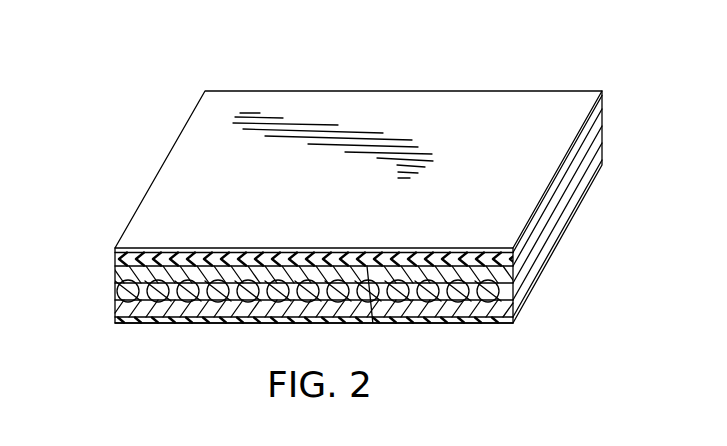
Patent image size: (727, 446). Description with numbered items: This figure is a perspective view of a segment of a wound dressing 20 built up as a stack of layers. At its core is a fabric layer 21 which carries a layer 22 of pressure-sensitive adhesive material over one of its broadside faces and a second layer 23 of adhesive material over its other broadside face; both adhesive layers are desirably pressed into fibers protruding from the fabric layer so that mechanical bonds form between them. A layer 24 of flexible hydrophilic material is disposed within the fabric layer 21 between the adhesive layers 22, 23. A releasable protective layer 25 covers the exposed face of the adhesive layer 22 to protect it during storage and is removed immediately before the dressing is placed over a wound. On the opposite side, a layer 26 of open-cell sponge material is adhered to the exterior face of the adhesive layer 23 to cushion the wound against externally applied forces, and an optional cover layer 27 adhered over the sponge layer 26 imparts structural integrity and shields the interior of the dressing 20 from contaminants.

The wound dressing 20 is at (463, 77).
The fabric layer 21 is at (148, 285).
The layer of pressure-sensitive adhesive material 22 is at (141, 313).
The second layer of adhesive material 23 is at (139, 284).
The layer of flexible hydrophilic material 24 is at (450, 292).
The releasable protective layer 25 is at (228, 324).
The layer of open-cell sponge material 26 is at (516, 257).
The cover layer 27 is at (168, 192).